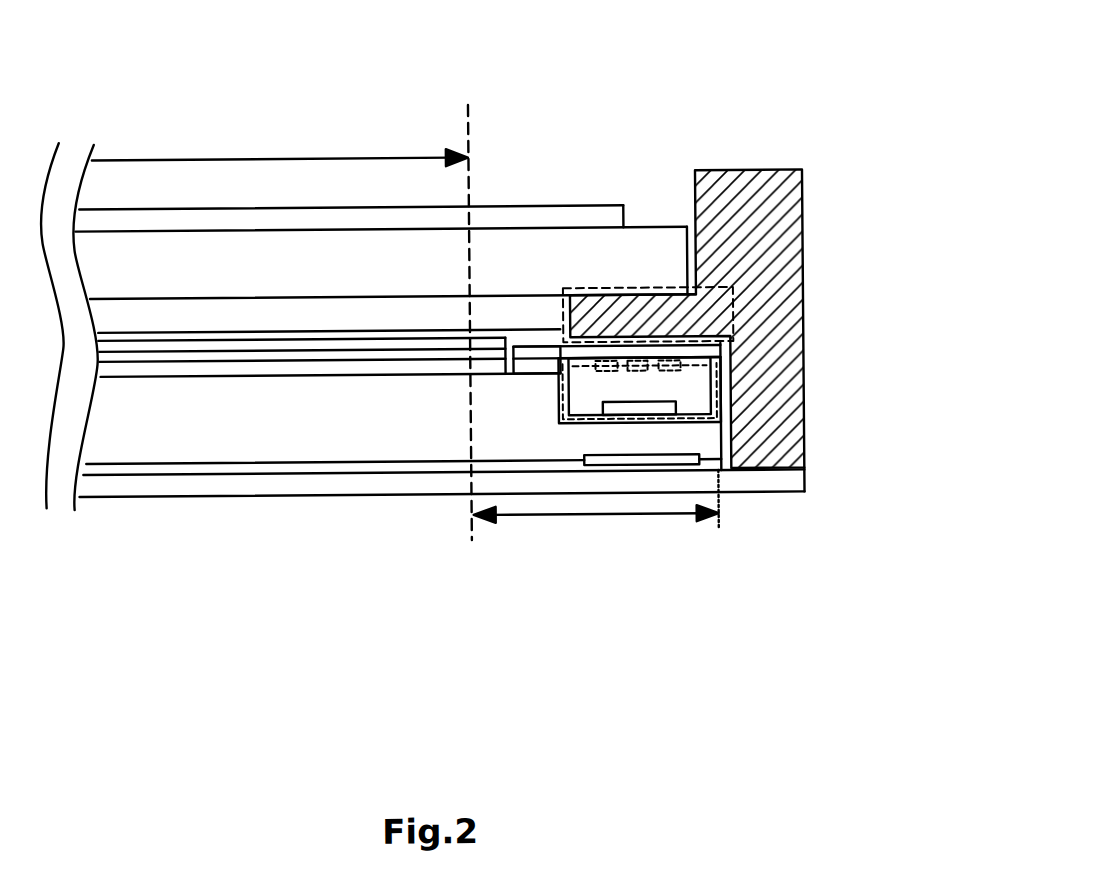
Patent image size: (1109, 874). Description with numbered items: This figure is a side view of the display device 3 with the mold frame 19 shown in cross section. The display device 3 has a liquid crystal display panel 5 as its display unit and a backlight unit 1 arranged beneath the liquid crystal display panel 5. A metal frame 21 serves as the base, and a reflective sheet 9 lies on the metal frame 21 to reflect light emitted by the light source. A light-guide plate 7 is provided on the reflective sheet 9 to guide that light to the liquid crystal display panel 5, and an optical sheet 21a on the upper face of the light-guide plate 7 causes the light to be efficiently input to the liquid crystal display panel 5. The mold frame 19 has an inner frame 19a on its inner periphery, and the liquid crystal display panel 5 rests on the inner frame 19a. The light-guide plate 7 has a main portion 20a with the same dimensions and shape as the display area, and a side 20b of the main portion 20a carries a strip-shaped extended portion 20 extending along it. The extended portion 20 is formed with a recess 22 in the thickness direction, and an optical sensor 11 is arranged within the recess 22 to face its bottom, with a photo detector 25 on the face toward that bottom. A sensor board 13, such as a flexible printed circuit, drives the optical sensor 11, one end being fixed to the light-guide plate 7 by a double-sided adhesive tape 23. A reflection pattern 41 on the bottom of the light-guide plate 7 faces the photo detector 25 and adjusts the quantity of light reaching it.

The backlight unit 1 is at (436, 580).
The display device 3 is at (874, 148).
The liquid crystal display panel 5 is at (593, 222).
The light-guide plate 7 is at (175, 440).
The reflective sheet 9 is at (115, 470).
The optical sensor 11 is at (698, 393).
The sensor board 13 is at (700, 352).
The mold frame 19 is at (803, 178).
The inner frame 19a is at (715, 292).
The extended portion 20 is at (622, 516).
The main portion 20a is at (148, 156).
The side 20b is at (470, 206).
The metal frame 21 is at (755, 486).
The optical sheet 21a is at (250, 370).
The recess 22 is at (721, 411).
The double-sided adhesive tape 23 is at (537, 368).
The photo detector 25 is at (660, 412).
The reflection pattern 41 is at (698, 461).